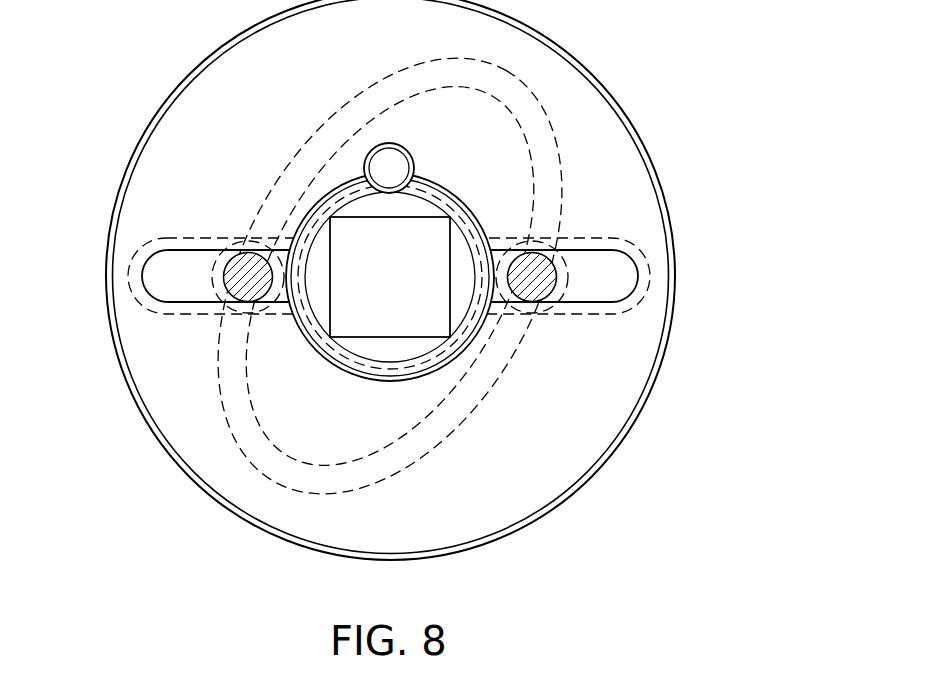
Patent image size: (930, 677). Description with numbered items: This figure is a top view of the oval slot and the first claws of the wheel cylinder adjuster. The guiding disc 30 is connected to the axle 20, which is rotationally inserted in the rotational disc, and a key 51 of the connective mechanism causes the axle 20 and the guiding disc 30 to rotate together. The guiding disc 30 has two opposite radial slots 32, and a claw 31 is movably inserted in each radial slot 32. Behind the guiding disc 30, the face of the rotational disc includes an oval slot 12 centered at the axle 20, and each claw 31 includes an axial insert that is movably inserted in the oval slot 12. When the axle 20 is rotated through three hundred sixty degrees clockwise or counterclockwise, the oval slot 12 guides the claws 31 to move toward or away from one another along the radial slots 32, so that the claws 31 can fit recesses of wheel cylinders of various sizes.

The oval slot 12 is at (547, 122).
The axle 20 is at (443, 352).
The guiding disc 30 is at (608, 180).
The claw 31 is at (557, 277).
The radial slot 32 is at (145, 267).
The key 51 is at (387, 160).